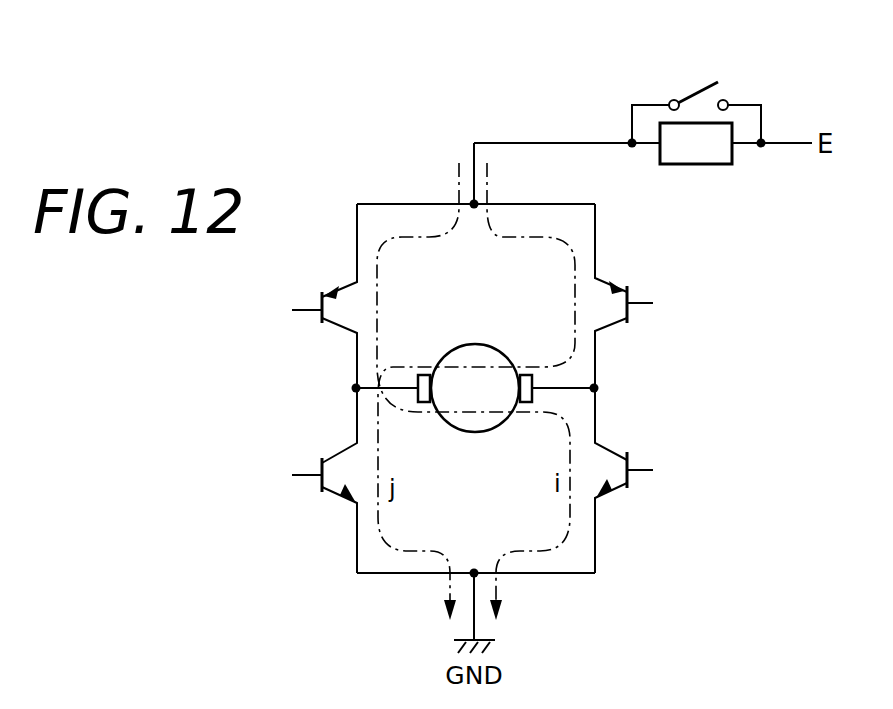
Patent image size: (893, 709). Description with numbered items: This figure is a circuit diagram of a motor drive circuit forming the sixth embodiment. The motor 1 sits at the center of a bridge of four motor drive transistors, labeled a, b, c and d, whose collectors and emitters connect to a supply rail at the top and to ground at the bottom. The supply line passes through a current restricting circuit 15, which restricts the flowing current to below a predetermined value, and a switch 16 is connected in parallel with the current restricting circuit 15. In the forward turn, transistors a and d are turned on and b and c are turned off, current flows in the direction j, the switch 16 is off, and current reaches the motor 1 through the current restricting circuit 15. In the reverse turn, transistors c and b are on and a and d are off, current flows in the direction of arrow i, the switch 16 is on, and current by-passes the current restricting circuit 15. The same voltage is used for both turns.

The motor 1 is at (485, 350).
The current restricting circuit 15 is at (708, 156).
The switch 16 is at (698, 86).